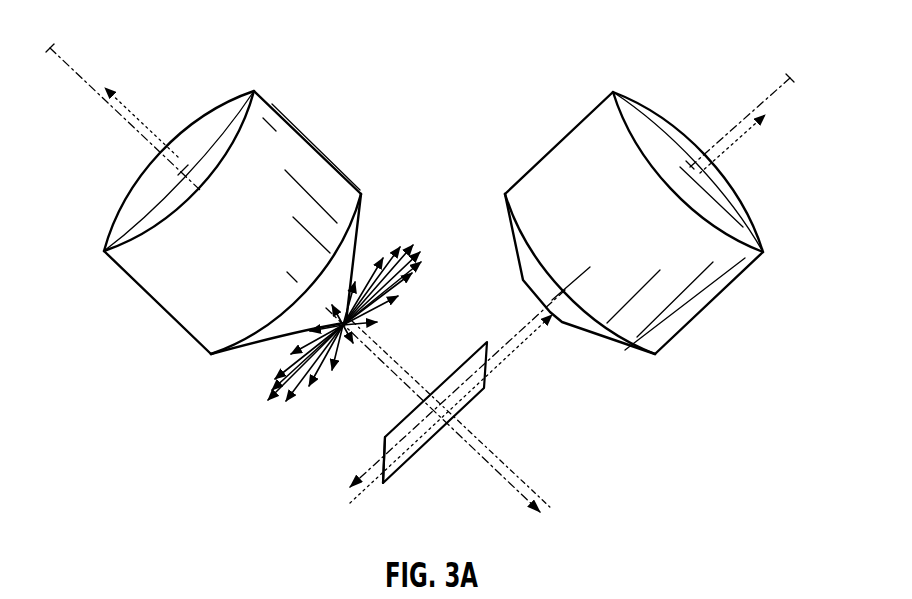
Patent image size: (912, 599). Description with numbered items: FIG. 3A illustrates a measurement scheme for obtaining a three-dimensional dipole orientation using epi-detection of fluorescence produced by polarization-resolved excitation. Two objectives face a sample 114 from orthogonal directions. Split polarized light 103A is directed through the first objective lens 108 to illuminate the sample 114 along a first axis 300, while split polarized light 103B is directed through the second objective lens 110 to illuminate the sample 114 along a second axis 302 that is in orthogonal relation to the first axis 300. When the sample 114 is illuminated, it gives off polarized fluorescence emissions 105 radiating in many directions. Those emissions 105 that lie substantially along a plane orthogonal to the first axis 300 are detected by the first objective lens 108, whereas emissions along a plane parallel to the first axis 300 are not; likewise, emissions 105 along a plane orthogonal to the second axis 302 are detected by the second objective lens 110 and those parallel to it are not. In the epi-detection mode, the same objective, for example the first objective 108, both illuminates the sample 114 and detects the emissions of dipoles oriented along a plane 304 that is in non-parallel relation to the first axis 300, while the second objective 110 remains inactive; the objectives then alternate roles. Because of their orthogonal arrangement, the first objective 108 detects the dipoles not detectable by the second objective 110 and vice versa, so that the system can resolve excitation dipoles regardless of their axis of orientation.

The split polarized light 103A is at (117, 107).
The split polarized light 103B is at (415, 392).
The polarized fluorescence emissions 105 is at (389, 351).
The first objective lens 108 is at (321, 153).
The second objective lens 110 is at (593, 108).
The sample 114 is at (404, 463).
The first axis 300 is at (52, 48).
The second axis 302 is at (790, 78).
The plane 304 is at (388, 447).